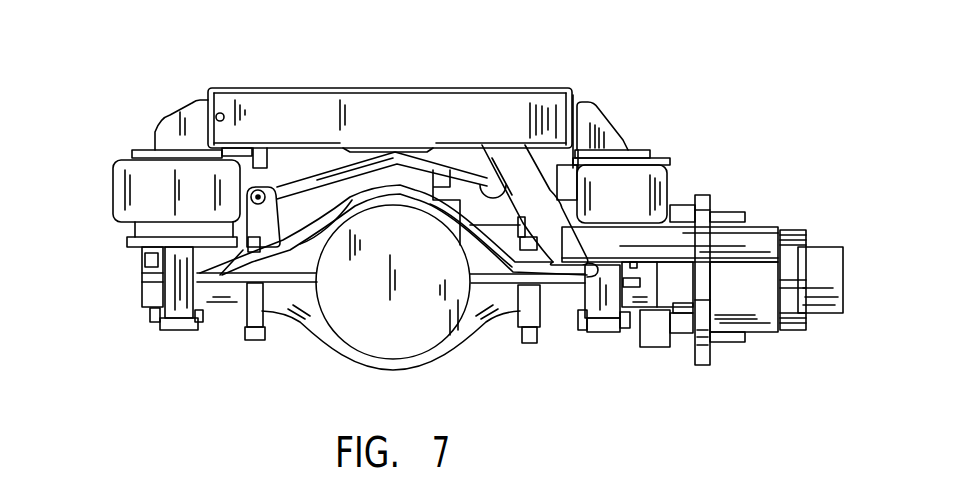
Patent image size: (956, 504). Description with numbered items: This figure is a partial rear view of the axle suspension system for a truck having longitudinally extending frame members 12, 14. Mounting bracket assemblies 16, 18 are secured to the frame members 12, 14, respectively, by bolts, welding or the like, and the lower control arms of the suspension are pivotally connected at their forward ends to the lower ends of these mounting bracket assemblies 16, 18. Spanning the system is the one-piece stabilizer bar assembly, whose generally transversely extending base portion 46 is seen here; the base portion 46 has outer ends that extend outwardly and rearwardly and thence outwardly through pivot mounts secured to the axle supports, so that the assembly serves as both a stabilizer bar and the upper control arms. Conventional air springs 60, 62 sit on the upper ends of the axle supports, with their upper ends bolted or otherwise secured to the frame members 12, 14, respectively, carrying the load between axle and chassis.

The frame member 12 is at (553, 88).
The frame member 14 is at (232, 87).
The mounting bracket assembly 16 is at (603, 338).
The mounting bracket assembly 18 is at (182, 340).
The base portion 46 is at (428, 147).
The air spring 60 is at (640, 188).
The air spring 62 is at (132, 187).